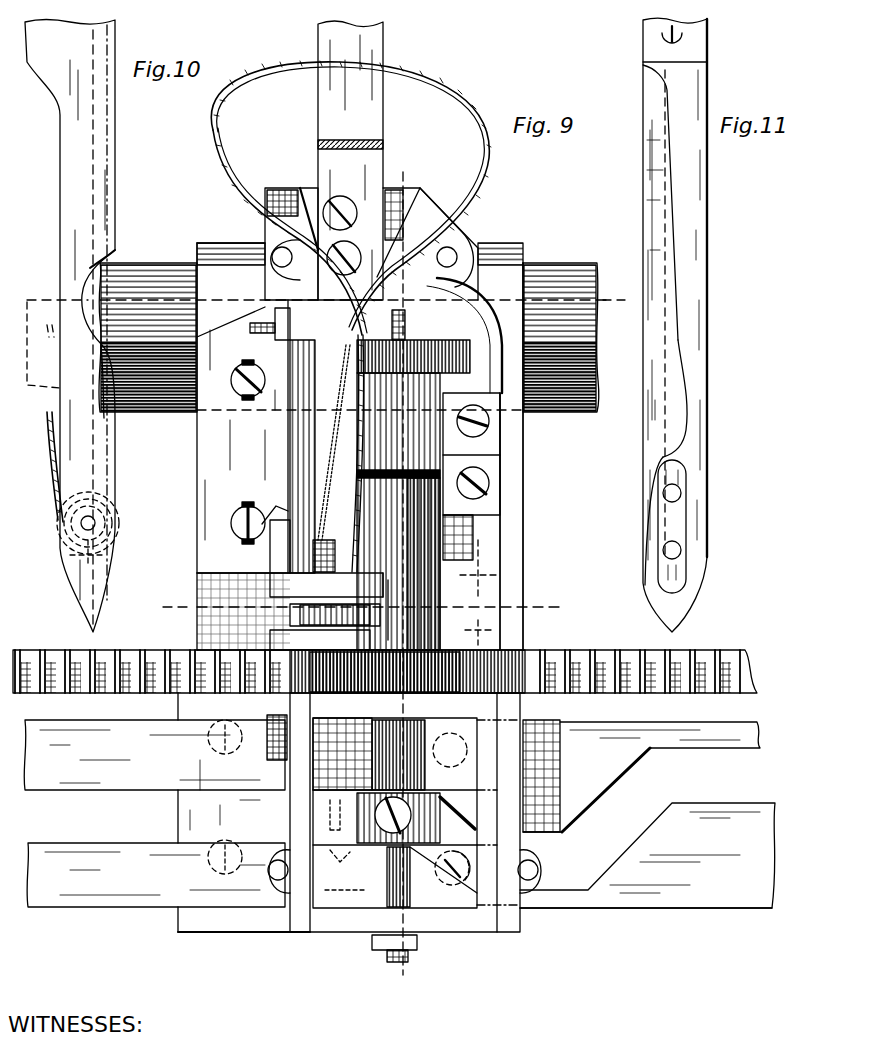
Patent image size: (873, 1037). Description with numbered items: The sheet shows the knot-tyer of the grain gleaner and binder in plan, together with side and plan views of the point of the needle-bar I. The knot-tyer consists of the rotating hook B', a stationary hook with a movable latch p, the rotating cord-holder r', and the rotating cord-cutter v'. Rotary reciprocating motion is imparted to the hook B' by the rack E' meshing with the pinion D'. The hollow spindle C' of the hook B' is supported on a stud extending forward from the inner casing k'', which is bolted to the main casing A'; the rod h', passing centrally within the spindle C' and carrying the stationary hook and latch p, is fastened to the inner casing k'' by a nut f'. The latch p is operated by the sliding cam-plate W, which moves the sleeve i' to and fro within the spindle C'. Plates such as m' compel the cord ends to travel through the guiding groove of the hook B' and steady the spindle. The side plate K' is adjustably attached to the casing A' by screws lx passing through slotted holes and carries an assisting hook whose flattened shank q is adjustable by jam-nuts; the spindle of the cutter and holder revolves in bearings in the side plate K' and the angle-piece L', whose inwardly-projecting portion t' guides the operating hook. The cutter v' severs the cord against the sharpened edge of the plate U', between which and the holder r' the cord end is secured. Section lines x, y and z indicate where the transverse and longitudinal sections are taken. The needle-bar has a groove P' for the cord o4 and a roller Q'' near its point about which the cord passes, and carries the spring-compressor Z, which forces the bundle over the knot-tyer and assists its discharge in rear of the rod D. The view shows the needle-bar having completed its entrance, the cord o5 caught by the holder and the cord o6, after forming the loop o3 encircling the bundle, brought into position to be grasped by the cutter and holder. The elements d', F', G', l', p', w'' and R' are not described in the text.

In FIG. 10, the needle I is at (70, 326).
In FIG. 9, the needle I is at (357, 160).
In FIG. 11, the needle I is at (686, 325).
In FIG. 10, the groove P' is at (103, 325).
In FIG. 11, the groove P' is at (662, 312).
In FIG. 10, the cord o4 is at (116, 256).
In FIG. 10, the section line x- x is at (64, 344).
In FIG. 9, the section line x- x is at (360, 311).
In FIG. 11, the section line x- x is at (614, 311).
In FIG. 10, the section line y- y is at (177, 620).
In FIG. 9, the section line y- y is at (379, 619).
In FIG. 9, the section line z- z is at (407, 575).
In FIG. 10, the cord o6 is at (46, 467).
In FIG. 10, the roller Q'' is at (102, 528).
In FIG. 11, the roller Q'' is at (685, 526).
In FIG. 9, the spring-compressor Z is at (350, 164).
In FIG. 11, the spring-compressor Z is at (684, 44).
In FIG. 9, the loop o3 is at (361, 198).
In FIG. 9, the rotating hook B' is at (360, 419).
In FIG. 9, the movable latch p is at (399, 313).
In FIG. 9, the rod D is at (349, 352).
In FIG. 9, the side plate K' is at (360, 446).
In FIG. 9, the shank q is at (270, 334).
In FIG. 9, the screw l' is at (240, 380).
In FIG. 9, the screws lx is at (231, 518).
In FIG. 9, the lever w'' is at (275, 518).
In FIG. 9, the cord o5 is at (338, 453).
In FIG. 9, the hollow spindle C' is at (398, 511).
In FIG. 9, the plate m' is at (471, 510).
In FIG. 9, the main casing A' is at (417, 522).
In FIG. 9, the plate p' is at (243, 611).
In FIG. 9, the rotating cord-cutter v' is at (326, 559).
In FIG. 9, the plate U' is at (396, 606).
In FIG. 9, the rotating cord-holder r' is at (335, 615).
In FIG. 11, the rotating cord-holder r' is at (712, 208).
In FIG. 9, the inwardly-projecting portion t' is at (320, 640).
In FIG. 9, the rack E' is at (385, 660).
In FIG. 9, the pinion D' is at (407, 671).
In FIG. 9, the inner casing k'' is at (349, 812).
In FIG. 9, the sleeve i' is at (395, 754).
In FIG. 9, the screw d' is at (385, 818).
In FIG. 9, the lever F' is at (443, 836).
In FIG. 9, the rod h' is at (395, 876).
In FIG. 9, the nut f' is at (403, 950).
In FIG. 9, the bed plate G' is at (399, 812).
In FIG. 9, the sliding cam-plate W is at (646, 922).
In FIG. 9, the angle-piece L' is at (277, 729).
In FIG. 11, the groove R' is at (666, 462).